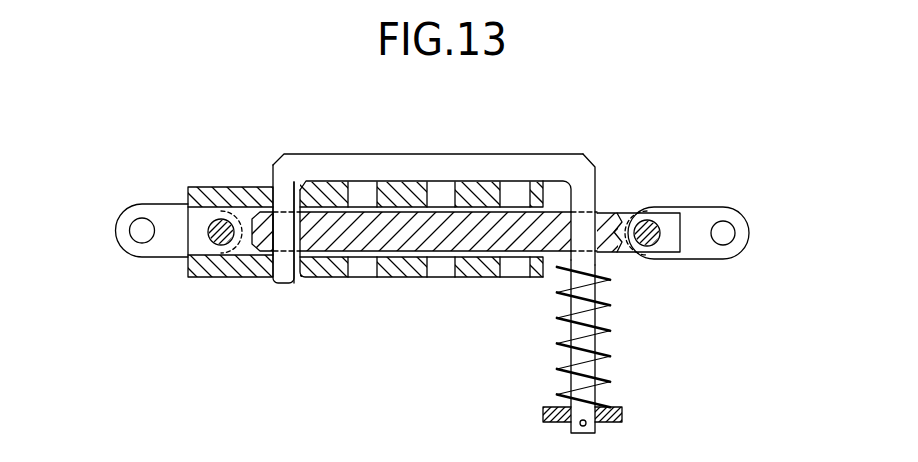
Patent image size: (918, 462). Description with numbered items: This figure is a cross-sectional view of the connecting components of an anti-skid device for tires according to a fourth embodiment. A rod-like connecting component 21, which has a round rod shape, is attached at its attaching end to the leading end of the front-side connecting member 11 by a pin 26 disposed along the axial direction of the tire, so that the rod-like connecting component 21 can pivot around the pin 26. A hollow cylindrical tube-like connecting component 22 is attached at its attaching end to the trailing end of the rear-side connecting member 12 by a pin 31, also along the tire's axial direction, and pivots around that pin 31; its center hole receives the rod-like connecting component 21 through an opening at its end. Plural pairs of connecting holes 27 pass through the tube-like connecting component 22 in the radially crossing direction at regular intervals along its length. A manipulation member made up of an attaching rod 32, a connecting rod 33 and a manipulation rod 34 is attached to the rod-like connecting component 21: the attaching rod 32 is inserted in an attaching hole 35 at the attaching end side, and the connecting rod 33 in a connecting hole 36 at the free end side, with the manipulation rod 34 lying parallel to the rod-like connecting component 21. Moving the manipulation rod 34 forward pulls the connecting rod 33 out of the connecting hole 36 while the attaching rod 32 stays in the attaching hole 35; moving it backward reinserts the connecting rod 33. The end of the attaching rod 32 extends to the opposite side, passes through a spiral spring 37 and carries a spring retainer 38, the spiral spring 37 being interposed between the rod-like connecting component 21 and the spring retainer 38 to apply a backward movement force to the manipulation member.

The front-side connecting member 11 is at (737, 207).
The rear-side connecting member 12 is at (136, 204).
The rod-like connecting component 21 is at (345, 181).
The tube-like connecting component 22 is at (532, 182).
The pin 26 is at (651, 222).
The connecting holes 27 is at (508, 182).
The pin 31 is at (220, 219).
The attaching rod 32 is at (600, 395).
The connecting rod 33 is at (292, 284).
The manipulation rod 34 is at (402, 154).
The attaching hole 35 is at (593, 217).
The connecting hole 36 is at (285, 232).
The spiral spring 37 is at (555, 368).
The spring retainer 38 is at (542, 413).